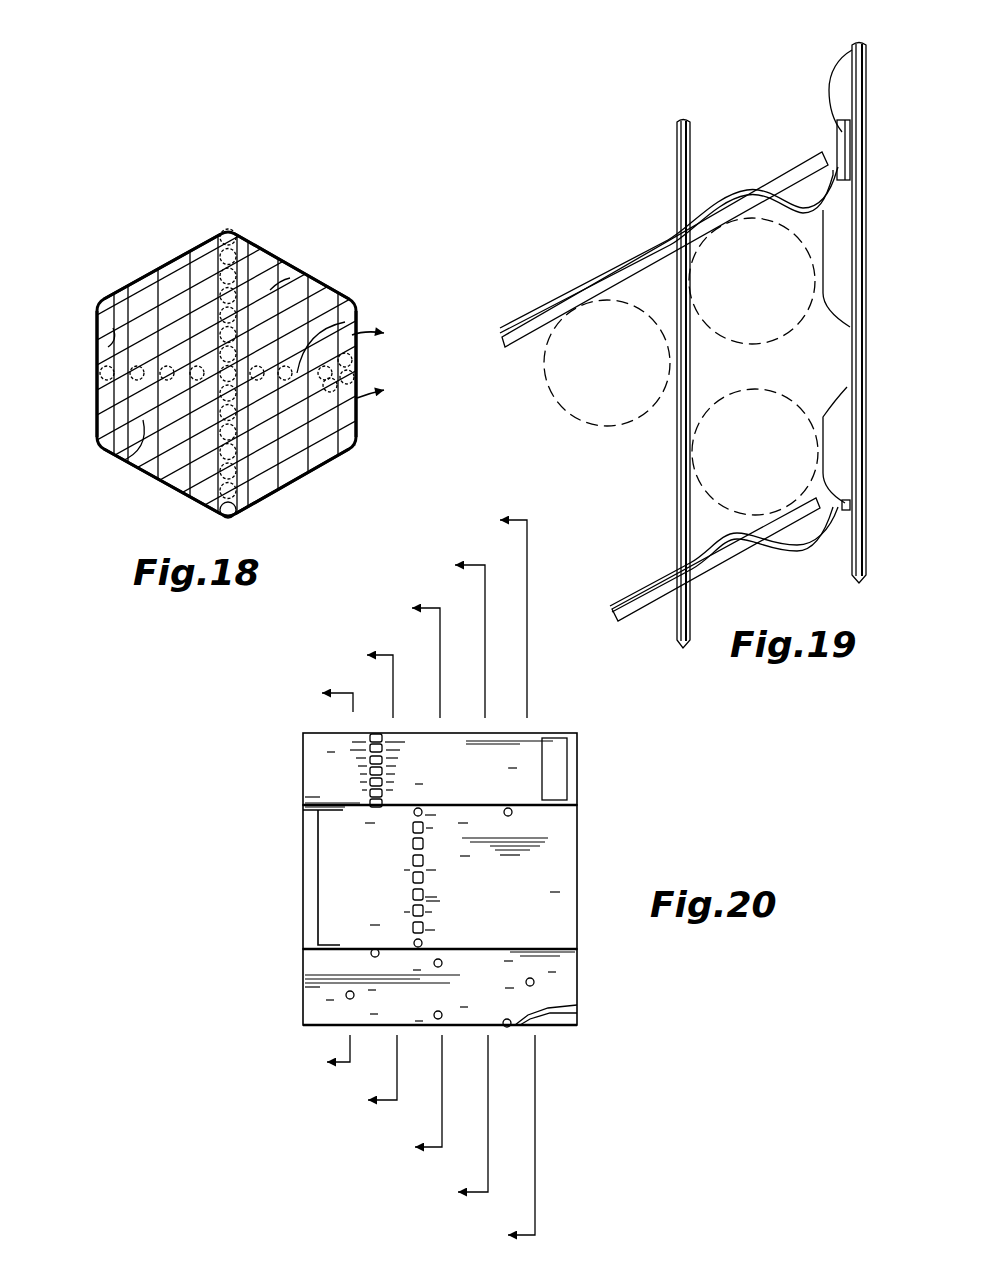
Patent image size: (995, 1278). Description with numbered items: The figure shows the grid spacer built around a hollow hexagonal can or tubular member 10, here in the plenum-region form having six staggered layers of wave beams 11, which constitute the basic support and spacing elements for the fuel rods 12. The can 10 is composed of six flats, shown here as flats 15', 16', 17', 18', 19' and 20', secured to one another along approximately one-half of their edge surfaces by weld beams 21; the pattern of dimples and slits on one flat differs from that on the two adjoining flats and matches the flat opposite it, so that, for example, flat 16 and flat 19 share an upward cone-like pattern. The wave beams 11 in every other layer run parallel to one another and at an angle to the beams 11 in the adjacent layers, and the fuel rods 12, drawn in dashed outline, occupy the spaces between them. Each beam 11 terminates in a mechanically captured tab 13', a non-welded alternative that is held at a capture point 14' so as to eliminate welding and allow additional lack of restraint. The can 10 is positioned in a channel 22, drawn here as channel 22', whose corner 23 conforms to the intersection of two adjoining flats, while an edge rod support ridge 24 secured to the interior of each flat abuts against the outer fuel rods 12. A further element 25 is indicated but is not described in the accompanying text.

In FIG. 18, the tubular member 10 is at (150, 259).
In FIG. 18, the wave beams 11 is at (270, 290).
In FIG. 19, the wave beams 11 is at (683, 153).
In FIG. 18, the fuel rod 12 is at (233, 240).
In FIG. 19, the fuel rod 12 is at (621, 349).
In FIG. 19, the mechanically captured tab 13' is at (675, 389).
In FIG. 19, the bracket / channel 14' is at (820, 312).
In FIG. 18, the side wall / curved end portion 15' is at (384, 377).
In FIG. 19, the side wall / curved end portion 15' is at (811, 91).
In FIG. 20, the flat 16 is at (573, 1011).
In FIG. 18, the lower right side wall 16' is at (297, 481).
In FIG. 18, the lower left side wall 17' is at (162, 487).
In FIG. 20, the lower left side wall 17' is at (470, 988).
In FIG. 18, the left side wall 18' is at (68, 374).
In FIG. 20, the left side wall 18' is at (470, 877).
In FIG. 18, the flat 19 is at (390, 357).
In FIG. 18, the upper left side wall 19' is at (162, 248).
In FIG. 20, the upper left side wall 19' is at (468, 770).
In FIG. 18, the upper right side wall 20' is at (304, 266).
In FIG. 20, the weld beams 21 is at (494, 878).
In FIG. 20, the channel 22 is at (447, 877).
In FIG. 19, the outer rod / rail 22' is at (826, 308).
In FIG. 20, the corner 23 is at (402, 879).
In FIG. 20, the edge rod support ridge 24 is at (357, 877).
In FIG. 20, the section line 25 is at (315, 882).